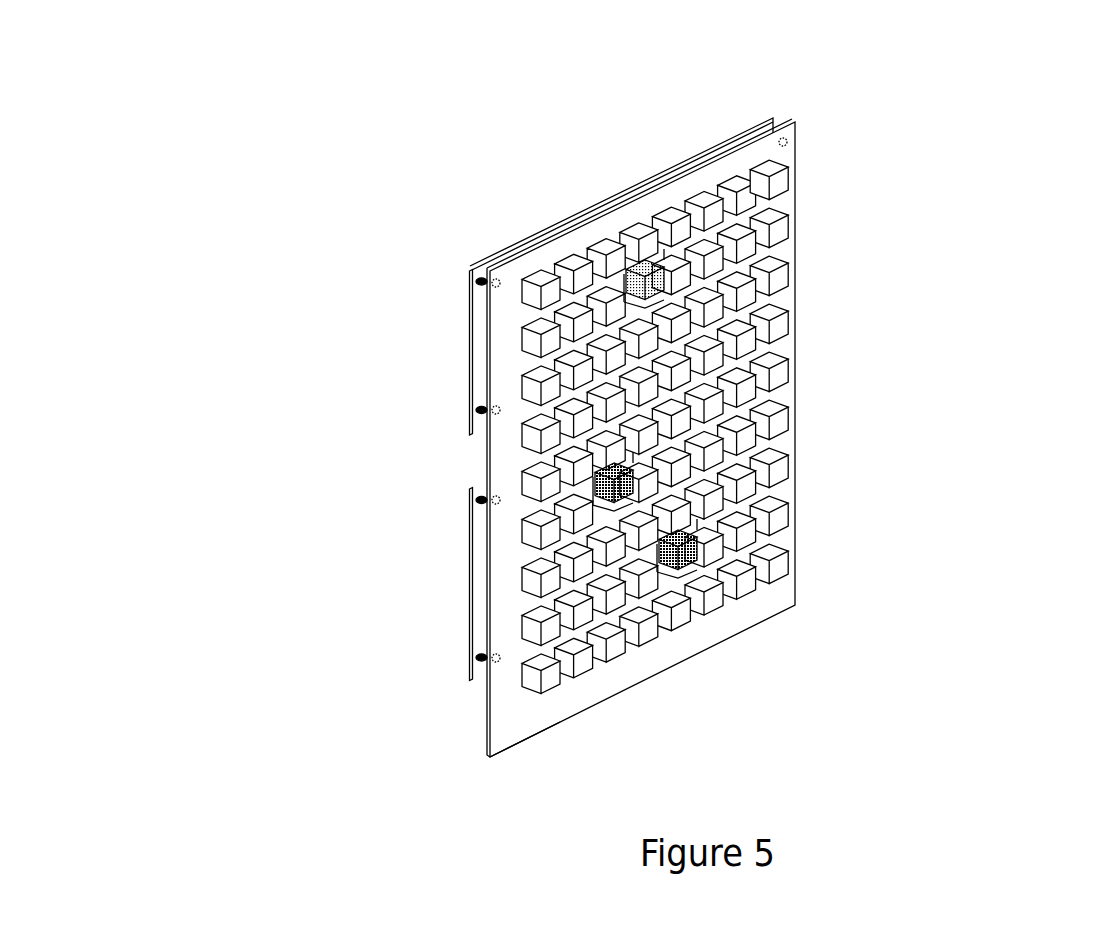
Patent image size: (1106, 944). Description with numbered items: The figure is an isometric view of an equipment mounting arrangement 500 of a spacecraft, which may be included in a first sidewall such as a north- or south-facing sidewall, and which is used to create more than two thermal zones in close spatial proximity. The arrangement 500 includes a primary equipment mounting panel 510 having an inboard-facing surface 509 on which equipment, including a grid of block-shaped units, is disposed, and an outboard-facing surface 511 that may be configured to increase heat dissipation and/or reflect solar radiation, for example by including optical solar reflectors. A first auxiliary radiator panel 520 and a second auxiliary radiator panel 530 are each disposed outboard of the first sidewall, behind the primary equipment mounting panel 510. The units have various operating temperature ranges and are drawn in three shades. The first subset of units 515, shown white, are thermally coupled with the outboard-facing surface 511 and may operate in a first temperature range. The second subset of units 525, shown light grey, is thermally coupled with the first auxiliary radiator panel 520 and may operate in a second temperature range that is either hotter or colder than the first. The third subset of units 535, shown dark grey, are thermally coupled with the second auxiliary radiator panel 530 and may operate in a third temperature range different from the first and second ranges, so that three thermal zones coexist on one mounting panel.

The equipment mounting arrangement 500 is at (200, 106).
The inboard-facing surface 509 is at (708, 630).
The primary equipment mounting panel 510 is at (735, 415).
The outboard-facing surface 511 is at (487, 699).
The first subset of units 515 is at (795, 178).
The first auxiliary radiator panel 520 is at (585, 208).
The second subset of units 525 is at (660, 282).
The second auxiliary radiator panel 530 is at (470, 543).
The third subset of units 535 is at (697, 548).